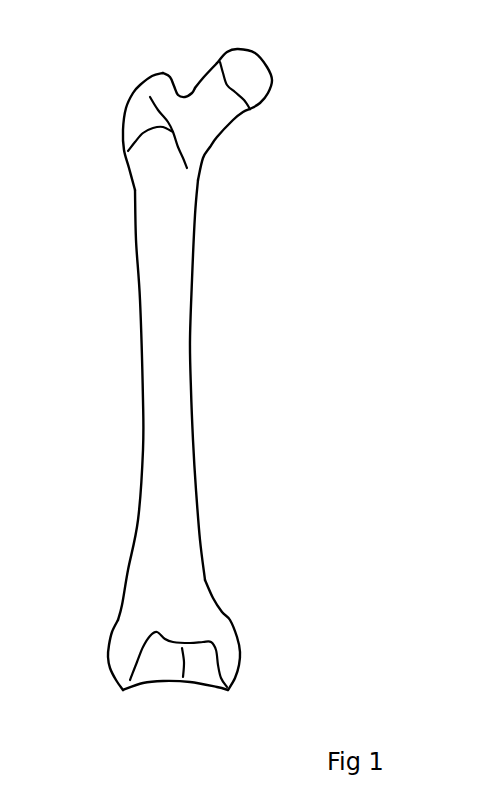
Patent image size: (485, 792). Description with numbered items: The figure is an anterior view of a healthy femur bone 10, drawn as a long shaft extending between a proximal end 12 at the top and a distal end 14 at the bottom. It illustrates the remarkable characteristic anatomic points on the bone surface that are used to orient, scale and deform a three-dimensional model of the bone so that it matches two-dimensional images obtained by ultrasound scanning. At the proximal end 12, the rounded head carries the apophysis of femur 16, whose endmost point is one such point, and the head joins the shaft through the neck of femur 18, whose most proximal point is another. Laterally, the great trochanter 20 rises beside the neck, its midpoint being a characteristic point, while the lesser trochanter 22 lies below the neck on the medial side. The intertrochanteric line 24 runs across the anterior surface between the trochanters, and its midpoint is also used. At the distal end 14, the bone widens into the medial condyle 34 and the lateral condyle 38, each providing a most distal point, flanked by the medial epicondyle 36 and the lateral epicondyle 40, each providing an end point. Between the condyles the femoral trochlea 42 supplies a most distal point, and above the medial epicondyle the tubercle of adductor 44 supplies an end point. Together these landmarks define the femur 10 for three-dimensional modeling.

The femur bone 10 is at (192, 380).
The proximal end 12 is at (240, 127).
The distal end 14 is at (219, 606).
The apophysis of femur 16 is at (263, 57).
The neck of femur 18 is at (190, 93).
The great trochanter 20 is at (142, 93).
The lesser trochanter 22 is at (210, 148).
The intertrochanteric line 24 is at (128, 151).
The medial condyle 34 is at (228, 692).
The medial epicondyle 36 is at (242, 652).
The lateral condyle 38 is at (122, 694).
The lateral epicondyle 40 is at (108, 658).
The femoral trochlea 42 is at (182, 683).
The tubercle of adductor 44 is at (224, 612).